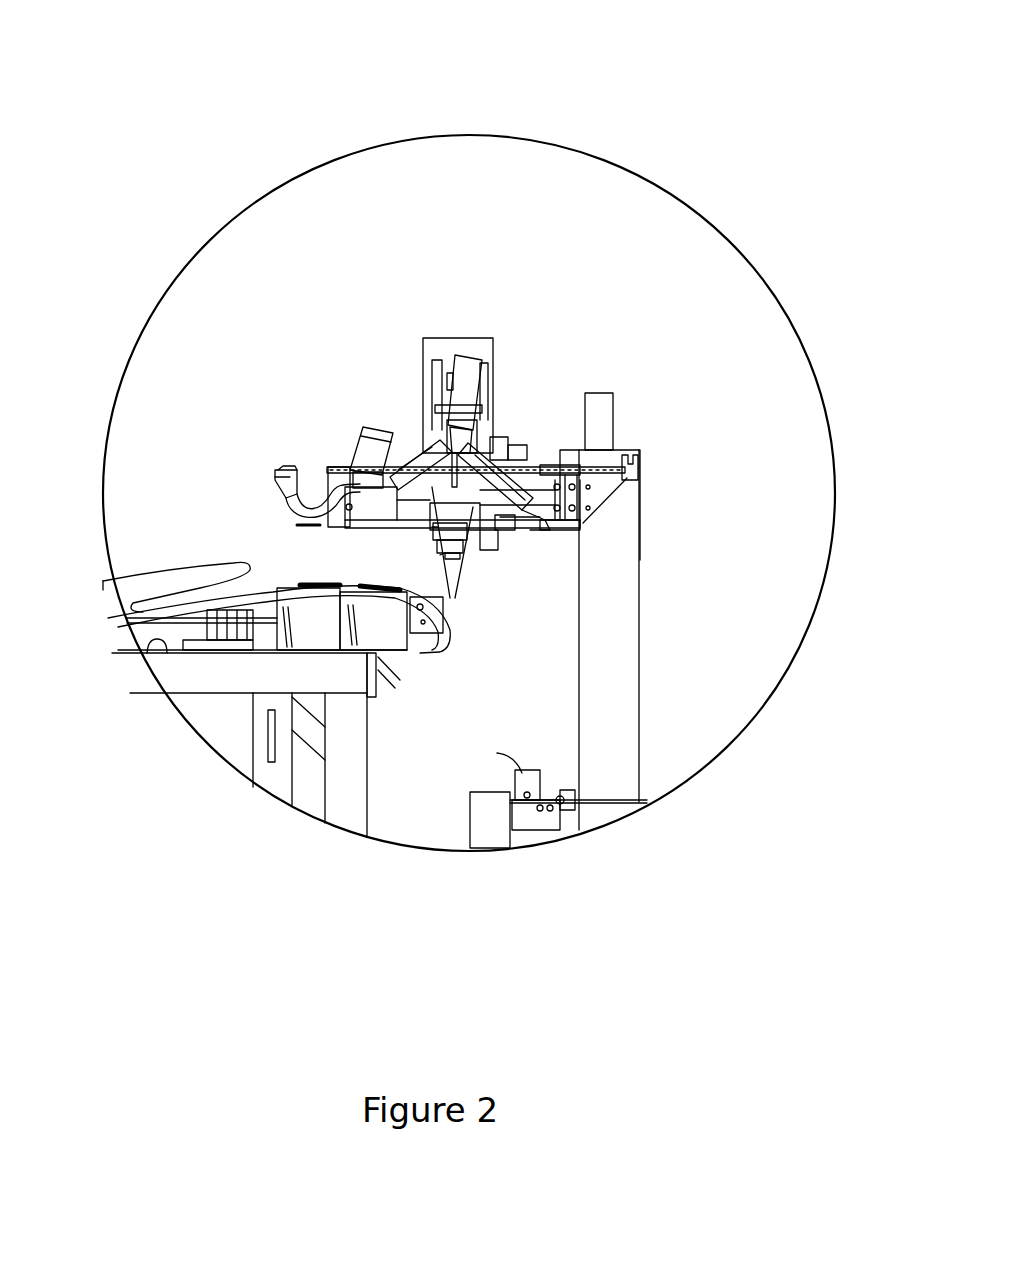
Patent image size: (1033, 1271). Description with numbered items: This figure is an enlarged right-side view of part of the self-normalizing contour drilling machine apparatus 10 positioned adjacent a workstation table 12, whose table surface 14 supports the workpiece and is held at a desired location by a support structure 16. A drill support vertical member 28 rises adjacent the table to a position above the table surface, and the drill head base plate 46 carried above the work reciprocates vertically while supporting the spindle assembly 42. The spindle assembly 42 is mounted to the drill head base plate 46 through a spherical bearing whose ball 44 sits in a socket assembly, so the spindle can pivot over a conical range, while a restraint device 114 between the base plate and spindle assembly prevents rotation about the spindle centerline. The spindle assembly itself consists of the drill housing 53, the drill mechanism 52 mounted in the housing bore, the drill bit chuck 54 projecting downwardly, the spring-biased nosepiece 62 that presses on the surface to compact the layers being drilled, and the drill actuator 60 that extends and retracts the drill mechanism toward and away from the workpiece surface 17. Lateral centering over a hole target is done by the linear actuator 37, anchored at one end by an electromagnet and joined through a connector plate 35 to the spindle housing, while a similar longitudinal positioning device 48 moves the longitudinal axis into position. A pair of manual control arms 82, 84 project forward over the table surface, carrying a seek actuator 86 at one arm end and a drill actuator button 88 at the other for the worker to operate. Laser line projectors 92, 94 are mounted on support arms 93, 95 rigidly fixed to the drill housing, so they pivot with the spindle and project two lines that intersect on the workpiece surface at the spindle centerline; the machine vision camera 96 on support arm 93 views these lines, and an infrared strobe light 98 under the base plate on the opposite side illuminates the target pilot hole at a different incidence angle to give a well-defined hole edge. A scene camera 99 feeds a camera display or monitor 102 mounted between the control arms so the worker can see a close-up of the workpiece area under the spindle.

The self-normalizing contour drilling machine apparatus 10 is at (552, 285).
The workstation table 12 is at (168, 678).
The table surface 14 is at (155, 641).
The support structure 16 is at (343, 812).
The workpiece surface 17 is at (235, 568).
The drill support vertical member 28 is at (482, 525).
The connector plate 35 is at (500, 423).
The linear actuator 37 is at (532, 448).
The spindle assembly 42 is at (622, 742).
The ball 44 is at (490, 539).
The drill head base plate 46 is at (550, 527).
The longitudinal positioning device 48 is at (497, 753).
The drill mechanism 52 is at (480, 530).
The drill housing 53 is at (497, 533).
The drill bit chuck 54 is at (462, 530).
The drill actuator 60 is at (467, 368).
The nosepiece 62 is at (452, 560).
The manual control arm 82 is at (275, 477).
The manual control arm 84 is at (292, 500).
The seek actuator 86 is at (278, 470).
The drill actuator button 88 is at (282, 473).
The laser line projector 92 is at (365, 535).
The support arm 93 is at (420, 430).
The laser line projector 94 is at (522, 528).
The support arm 95 is at (540, 517).
The machine vision camera 96 is at (440, 555).
The infrared strobe light 98 is at (528, 515).
The scene camera 99 is at (556, 462).
The camera display or monitor 102 is at (358, 441).
The restraint device 114 is at (432, 527).